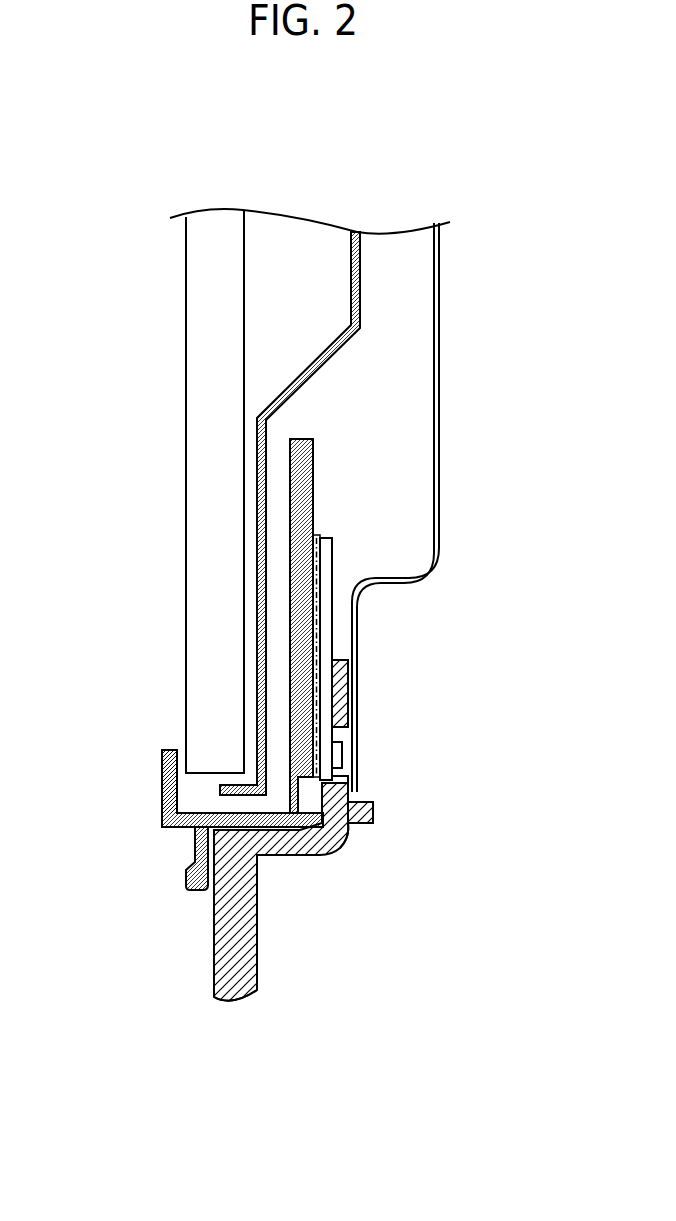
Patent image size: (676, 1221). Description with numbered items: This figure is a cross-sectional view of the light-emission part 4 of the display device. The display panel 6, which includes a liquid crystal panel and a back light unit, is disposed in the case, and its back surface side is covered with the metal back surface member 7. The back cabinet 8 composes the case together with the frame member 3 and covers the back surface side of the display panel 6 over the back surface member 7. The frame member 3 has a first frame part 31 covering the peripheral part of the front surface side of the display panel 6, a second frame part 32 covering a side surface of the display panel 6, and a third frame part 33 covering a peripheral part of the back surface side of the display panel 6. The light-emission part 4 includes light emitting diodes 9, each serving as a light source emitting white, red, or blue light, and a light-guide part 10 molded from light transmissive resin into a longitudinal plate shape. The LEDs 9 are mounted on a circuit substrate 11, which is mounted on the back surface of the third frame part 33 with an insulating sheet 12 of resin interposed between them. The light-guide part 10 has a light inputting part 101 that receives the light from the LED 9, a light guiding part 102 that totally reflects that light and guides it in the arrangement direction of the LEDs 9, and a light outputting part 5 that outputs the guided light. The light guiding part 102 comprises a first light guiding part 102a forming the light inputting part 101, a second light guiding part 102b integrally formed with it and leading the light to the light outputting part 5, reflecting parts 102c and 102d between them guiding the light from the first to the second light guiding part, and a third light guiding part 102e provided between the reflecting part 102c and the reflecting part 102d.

The frame member 3 is at (194, 802).
The light-emission part 4 is at (207, 900).
The light outputting part 5 is at (228, 1003).
The display panel 6 is at (200, 483).
The back surface member 7 is at (360, 285).
The back cabinet 8 is at (440, 425).
The light emitting diode 9 is at (343, 755).
The light-guide part 10 is at (372, 805).
The circuit substrate 11 is at (323, 622).
The insulating sheet 12 is at (327, 530).
The first frame part 31 is at (155, 780).
The second frame part 32 is at (172, 828).
The third frame part 33 is at (307, 433).
The light inputting part 101 is at (340, 777).
The light guiding part 102 is at (329, 860).
The first light guiding part 102a is at (348, 680).
The second light guiding part 102b is at (255, 962).
The reflecting part 102c is at (350, 842).
The reflecting part 102d is at (227, 833).
The third light guiding part 102e is at (277, 848).